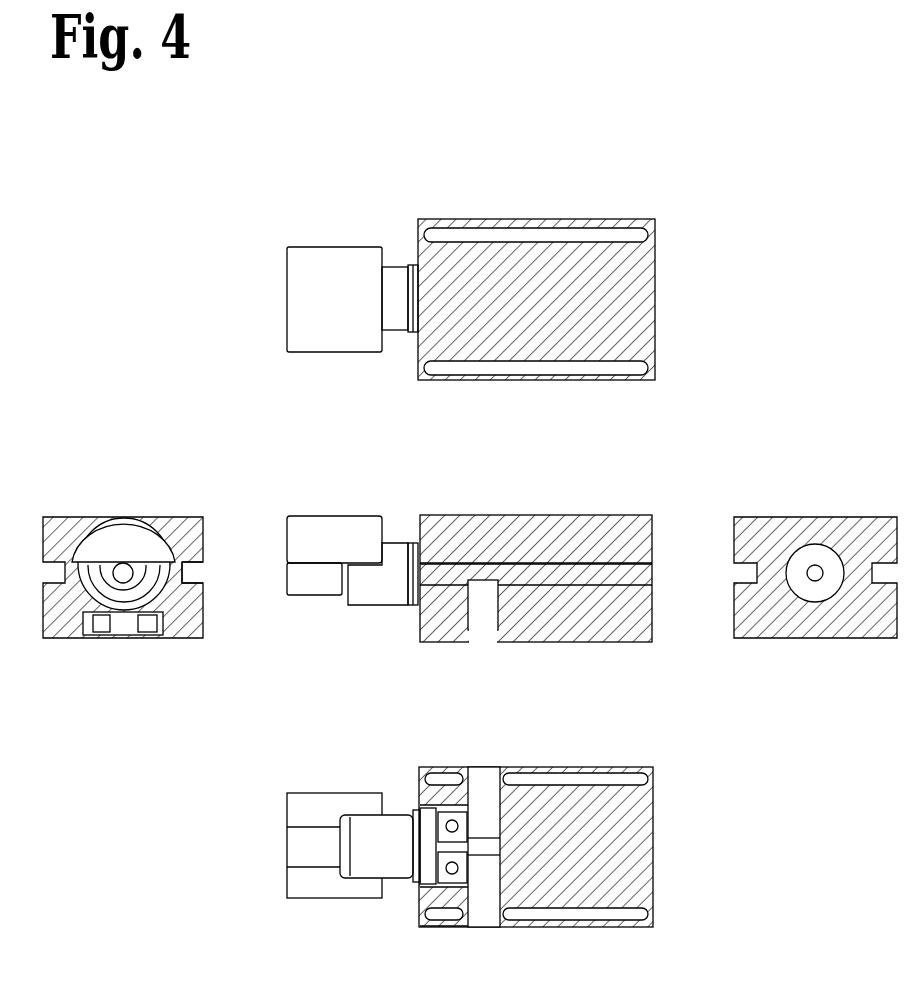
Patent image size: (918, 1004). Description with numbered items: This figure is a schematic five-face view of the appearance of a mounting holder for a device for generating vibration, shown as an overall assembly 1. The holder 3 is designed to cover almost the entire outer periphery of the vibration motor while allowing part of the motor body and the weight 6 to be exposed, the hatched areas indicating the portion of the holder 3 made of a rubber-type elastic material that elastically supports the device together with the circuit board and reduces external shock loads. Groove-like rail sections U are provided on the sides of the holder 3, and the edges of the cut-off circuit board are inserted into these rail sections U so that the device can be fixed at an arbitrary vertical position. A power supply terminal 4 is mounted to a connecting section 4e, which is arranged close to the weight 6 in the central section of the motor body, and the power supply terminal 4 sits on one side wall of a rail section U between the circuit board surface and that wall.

The connector 1 is at (220, 397).
The holder 3 is at (651, 519).
The power supply terminal 4 is at (361, 780).
The connecting section 4e is at (423, 960).
The weight 6 is at (231, 519).
The groove-like rail section U is at (448, 541).